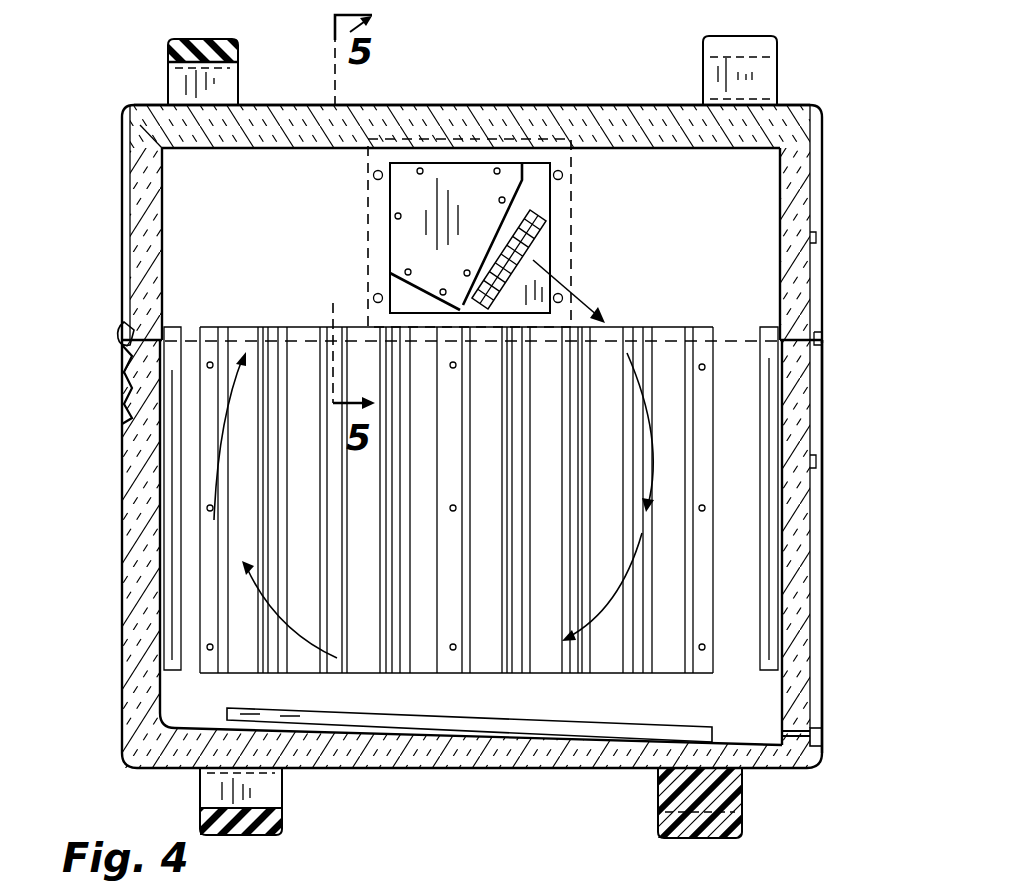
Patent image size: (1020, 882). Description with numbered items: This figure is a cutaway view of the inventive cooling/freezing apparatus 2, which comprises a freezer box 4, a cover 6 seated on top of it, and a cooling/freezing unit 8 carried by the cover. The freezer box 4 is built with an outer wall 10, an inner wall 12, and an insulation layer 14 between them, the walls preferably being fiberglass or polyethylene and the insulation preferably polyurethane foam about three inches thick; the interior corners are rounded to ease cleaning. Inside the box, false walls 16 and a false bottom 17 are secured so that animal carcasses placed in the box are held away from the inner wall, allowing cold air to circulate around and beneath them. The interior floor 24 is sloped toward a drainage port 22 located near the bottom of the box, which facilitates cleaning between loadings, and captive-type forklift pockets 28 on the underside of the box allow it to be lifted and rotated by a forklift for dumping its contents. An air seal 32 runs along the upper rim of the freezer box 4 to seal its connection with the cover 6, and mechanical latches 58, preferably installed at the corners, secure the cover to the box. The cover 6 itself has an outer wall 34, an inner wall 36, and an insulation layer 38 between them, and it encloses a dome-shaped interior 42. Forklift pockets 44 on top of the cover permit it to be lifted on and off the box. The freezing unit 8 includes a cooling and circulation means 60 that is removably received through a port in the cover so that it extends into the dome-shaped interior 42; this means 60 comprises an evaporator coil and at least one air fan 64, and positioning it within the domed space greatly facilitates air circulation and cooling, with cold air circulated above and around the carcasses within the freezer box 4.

The cooling/freezing apparatus 2 is at (495, 70).
The freezer box 4 is at (140, 595).
The cover 6 is at (797, 217).
The cooling/freezing unit 8 is at (376, 243).
The outer wall 10 is at (822, 537).
The inner wall 12 is at (781, 728).
The insulation layer 14 is at (800, 633).
The false walls 16 is at (180, 328).
The false bottom 17 is at (578, 727).
The drainage port 22 is at (818, 738).
The interior floor 24 is at (178, 723).
The captive-type forklift pockets 28 is at (272, 790).
The air seal 32 is at (148, 338).
The outer wall 34 is at (604, 107).
The inner wall 36 is at (727, 150).
The insulation layer 38 is at (550, 128).
The dome-shaped interior 42 is at (183, 205).
The forklift pockets 44 is at (168, 42).
The mechanical latches 58 is at (118, 340).
The cooling and circulation means 60 is at (403, 192).
The air fan 64 is at (540, 248).